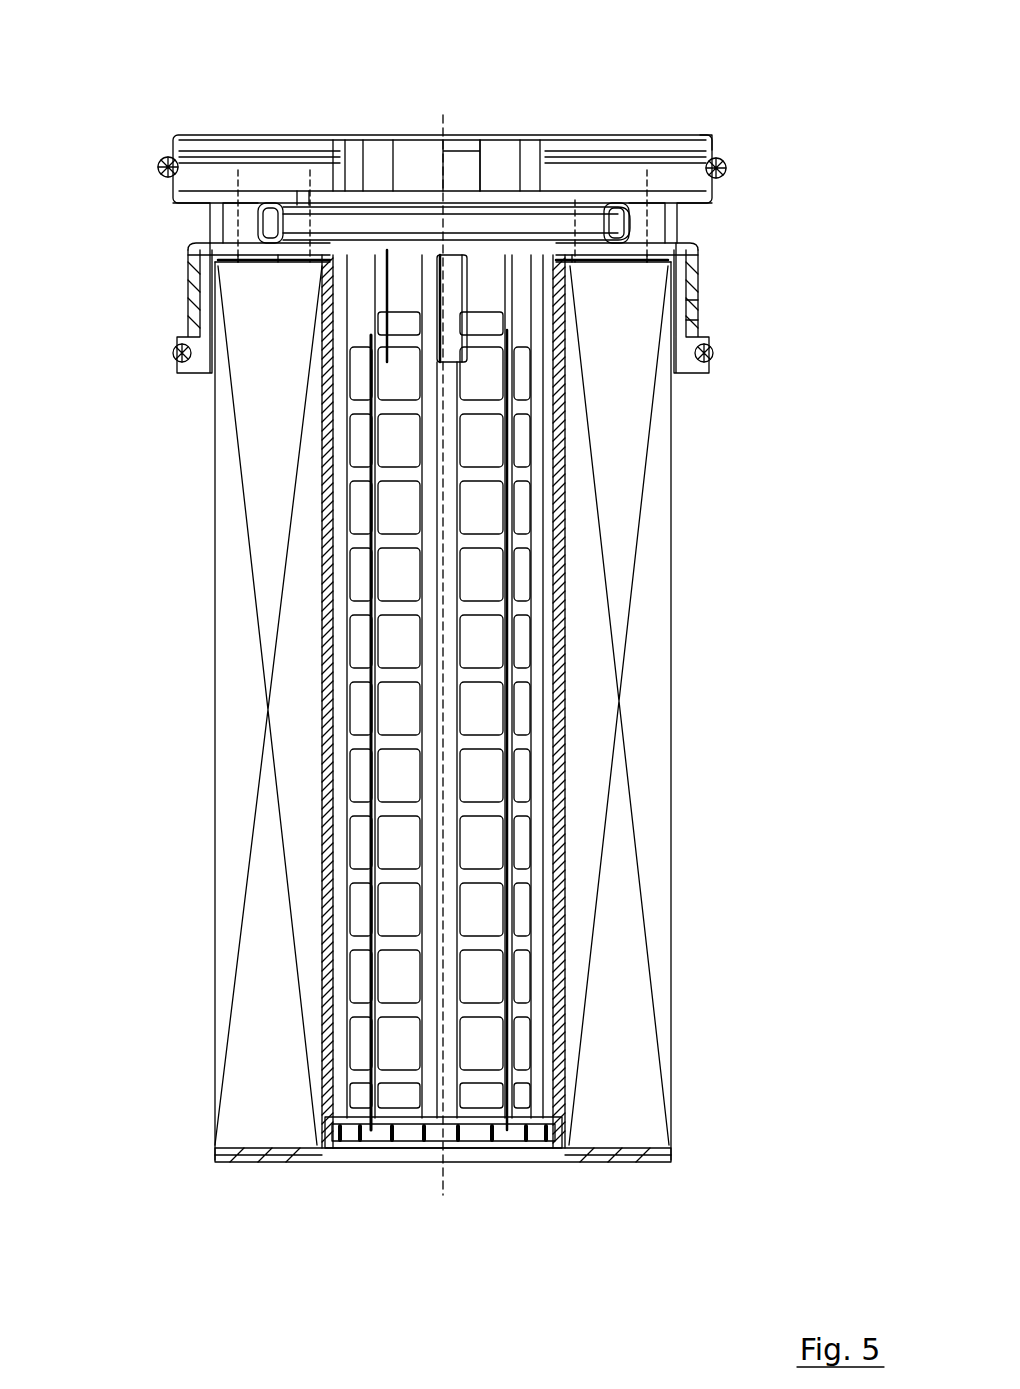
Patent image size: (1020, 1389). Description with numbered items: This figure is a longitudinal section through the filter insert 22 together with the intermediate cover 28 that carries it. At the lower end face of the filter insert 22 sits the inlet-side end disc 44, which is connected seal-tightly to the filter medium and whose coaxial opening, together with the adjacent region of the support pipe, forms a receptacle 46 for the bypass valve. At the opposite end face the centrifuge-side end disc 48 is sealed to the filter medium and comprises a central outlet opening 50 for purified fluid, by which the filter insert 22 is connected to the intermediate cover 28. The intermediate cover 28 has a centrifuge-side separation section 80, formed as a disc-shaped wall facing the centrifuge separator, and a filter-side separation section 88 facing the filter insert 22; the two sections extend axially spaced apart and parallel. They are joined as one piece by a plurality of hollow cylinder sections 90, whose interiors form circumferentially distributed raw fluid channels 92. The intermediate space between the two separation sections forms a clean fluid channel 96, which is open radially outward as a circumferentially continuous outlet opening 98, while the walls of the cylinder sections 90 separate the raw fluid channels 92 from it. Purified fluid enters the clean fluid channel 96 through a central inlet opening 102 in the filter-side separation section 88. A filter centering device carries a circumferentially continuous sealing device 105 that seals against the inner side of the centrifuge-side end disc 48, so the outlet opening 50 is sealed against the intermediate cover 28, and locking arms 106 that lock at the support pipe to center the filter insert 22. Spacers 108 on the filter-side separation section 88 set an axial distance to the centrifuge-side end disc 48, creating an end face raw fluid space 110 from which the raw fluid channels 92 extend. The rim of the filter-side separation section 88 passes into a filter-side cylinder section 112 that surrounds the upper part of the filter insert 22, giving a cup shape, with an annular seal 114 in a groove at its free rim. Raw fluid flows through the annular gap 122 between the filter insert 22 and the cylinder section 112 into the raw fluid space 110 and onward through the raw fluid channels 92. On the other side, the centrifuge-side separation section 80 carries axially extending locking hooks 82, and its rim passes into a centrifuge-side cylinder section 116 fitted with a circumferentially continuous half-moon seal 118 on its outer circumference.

The filter insert 22 is at (217, 880).
The intermediate cover 28 is at (174, 143).
The inlet-side end disc 44 is at (673, 1156).
The receptacle 46 is at (500, 1072).
The centrifuge-side end disc 48 is at (686, 261).
The outlet opening 50 is at (572, 260).
The centrifuge-side separation section 80 is at (302, 198).
The locking hooks 82 is at (470, 148).
The filter-side separation section 88 is at (322, 287).
The hollow cylinder sections 90 is at (498, 221).
The raw fluid channel 92 is at (243, 228).
The clean fluid channel 96 is at (582, 238).
The outlet opening 98 is at (182, 225).
The central inlet opening 102 is at (478, 265).
The sealing device 105 is at (277, 257).
The locking arms 106 is at (385, 338).
The spacers 108 is at (607, 255).
The end face raw fluid space 110 is at (243, 257).
The filter-side cylinder section 112 is at (698, 291).
The annular seal 114 is at (714, 354).
The centrifuge-side cylinder section 116 is at (713, 140).
The half-moon seal 118 is at (727, 168).
The annular gap 122 is at (208, 352).